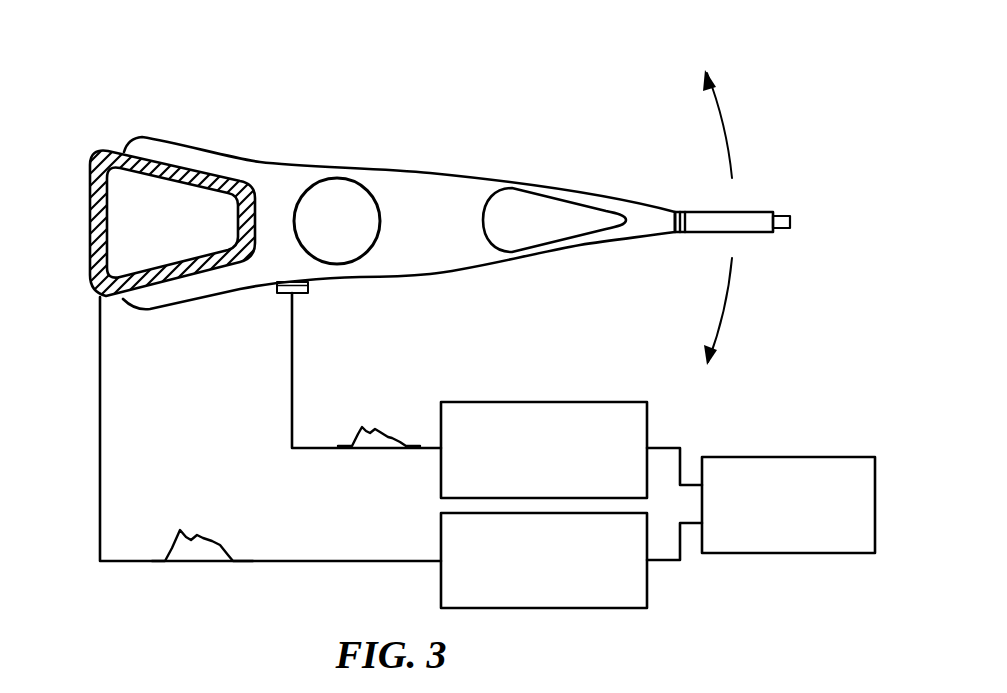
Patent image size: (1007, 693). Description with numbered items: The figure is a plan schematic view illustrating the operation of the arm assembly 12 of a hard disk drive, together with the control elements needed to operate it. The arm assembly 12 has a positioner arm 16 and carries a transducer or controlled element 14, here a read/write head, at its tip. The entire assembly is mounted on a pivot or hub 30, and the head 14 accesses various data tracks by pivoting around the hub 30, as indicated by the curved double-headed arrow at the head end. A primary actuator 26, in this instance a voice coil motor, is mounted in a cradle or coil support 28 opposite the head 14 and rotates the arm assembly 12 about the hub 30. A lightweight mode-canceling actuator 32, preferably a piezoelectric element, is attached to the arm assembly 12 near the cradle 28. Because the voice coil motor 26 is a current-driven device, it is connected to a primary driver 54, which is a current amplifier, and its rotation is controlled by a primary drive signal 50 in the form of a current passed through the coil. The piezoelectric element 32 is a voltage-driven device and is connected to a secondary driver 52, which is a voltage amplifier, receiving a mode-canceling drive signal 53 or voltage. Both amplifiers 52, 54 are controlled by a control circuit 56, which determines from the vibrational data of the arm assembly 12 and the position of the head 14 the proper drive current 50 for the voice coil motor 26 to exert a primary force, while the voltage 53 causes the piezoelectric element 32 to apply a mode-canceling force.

The arm assembly 12 is at (538, 113).
The transducer or controlled element 14 is at (790, 232).
The positioner arm 16 is at (418, 188).
The primary actuator 26 is at (107, 150).
The cradle or coil support 28 is at (161, 148).
The pivot or hub 30 is at (335, 242).
The mode-canceling actuator 32 is at (275, 296).
The primary drive signal 50 is at (172, 542).
The secondary driver 52 is at (517, 402).
The mode-canceling drive signal 53 is at (392, 436).
The primary driver 54 is at (647, 585).
The control circuit 56 is at (797, 457).